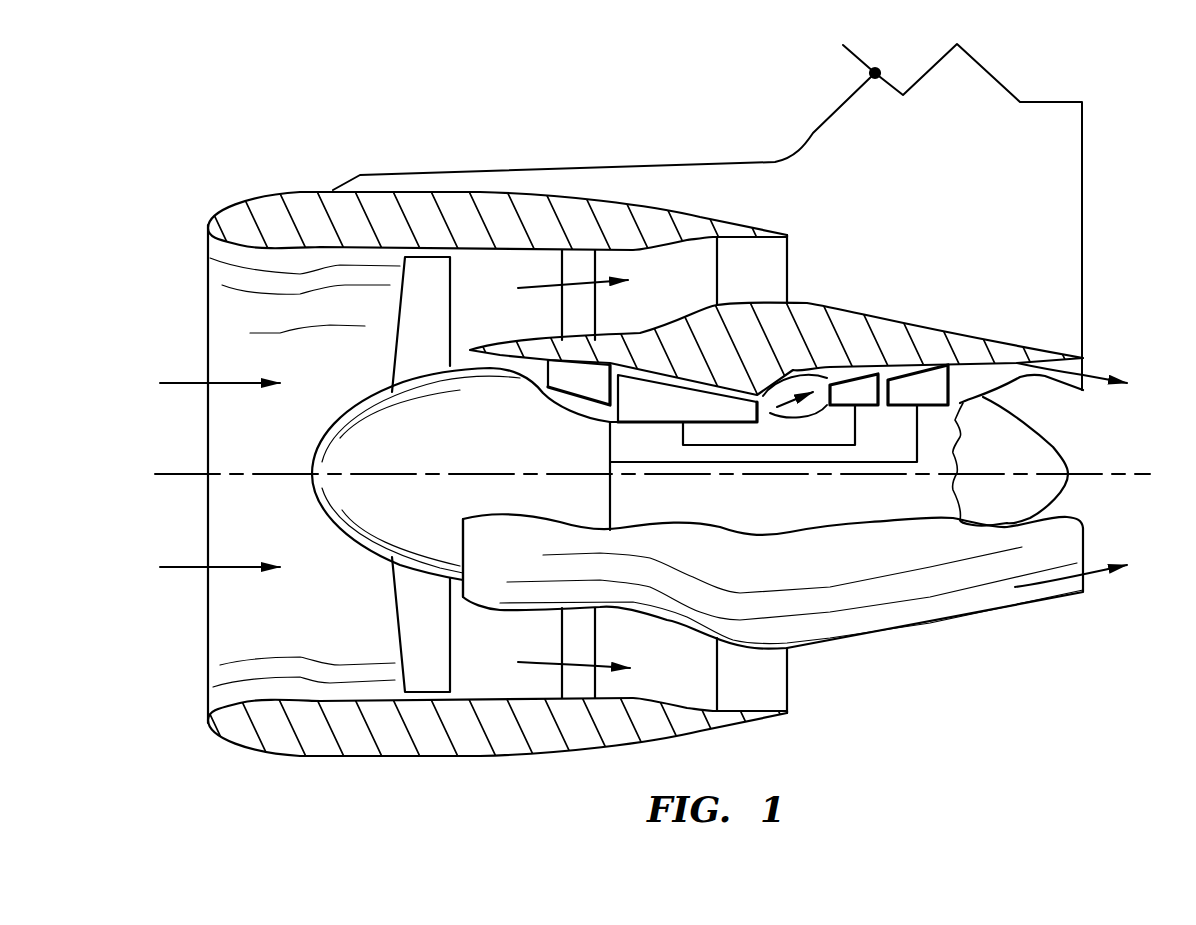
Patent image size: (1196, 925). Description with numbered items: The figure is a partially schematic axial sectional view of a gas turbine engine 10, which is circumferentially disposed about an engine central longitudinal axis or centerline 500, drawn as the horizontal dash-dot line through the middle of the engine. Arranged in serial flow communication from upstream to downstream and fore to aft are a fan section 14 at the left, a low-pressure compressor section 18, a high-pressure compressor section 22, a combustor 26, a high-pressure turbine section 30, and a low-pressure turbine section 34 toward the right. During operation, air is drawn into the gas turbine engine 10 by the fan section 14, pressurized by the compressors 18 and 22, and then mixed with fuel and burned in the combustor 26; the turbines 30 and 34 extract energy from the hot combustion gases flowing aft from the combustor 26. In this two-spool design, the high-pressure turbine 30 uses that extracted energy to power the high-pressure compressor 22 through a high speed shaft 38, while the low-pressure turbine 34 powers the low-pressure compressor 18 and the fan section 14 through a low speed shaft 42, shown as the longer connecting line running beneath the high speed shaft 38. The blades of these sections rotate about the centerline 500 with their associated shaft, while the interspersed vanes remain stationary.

The gas turbine engine 10 is at (295, 150).
The fan section 14 is at (390, 580).
The low-pressure compressor section 18 is at (588, 382).
The high-pressure compressor section 22 is at (682, 410).
The combustor 26 is at (813, 408).
The high-pressure turbine section 30 is at (863, 407).
The low-pressure turbine section 34 is at (935, 405).
The high speed shaft 38 is at (768, 445).
The low speed shaft 42 is at (690, 462).
The engine central longitudinal axis 500 is at (1120, 475).